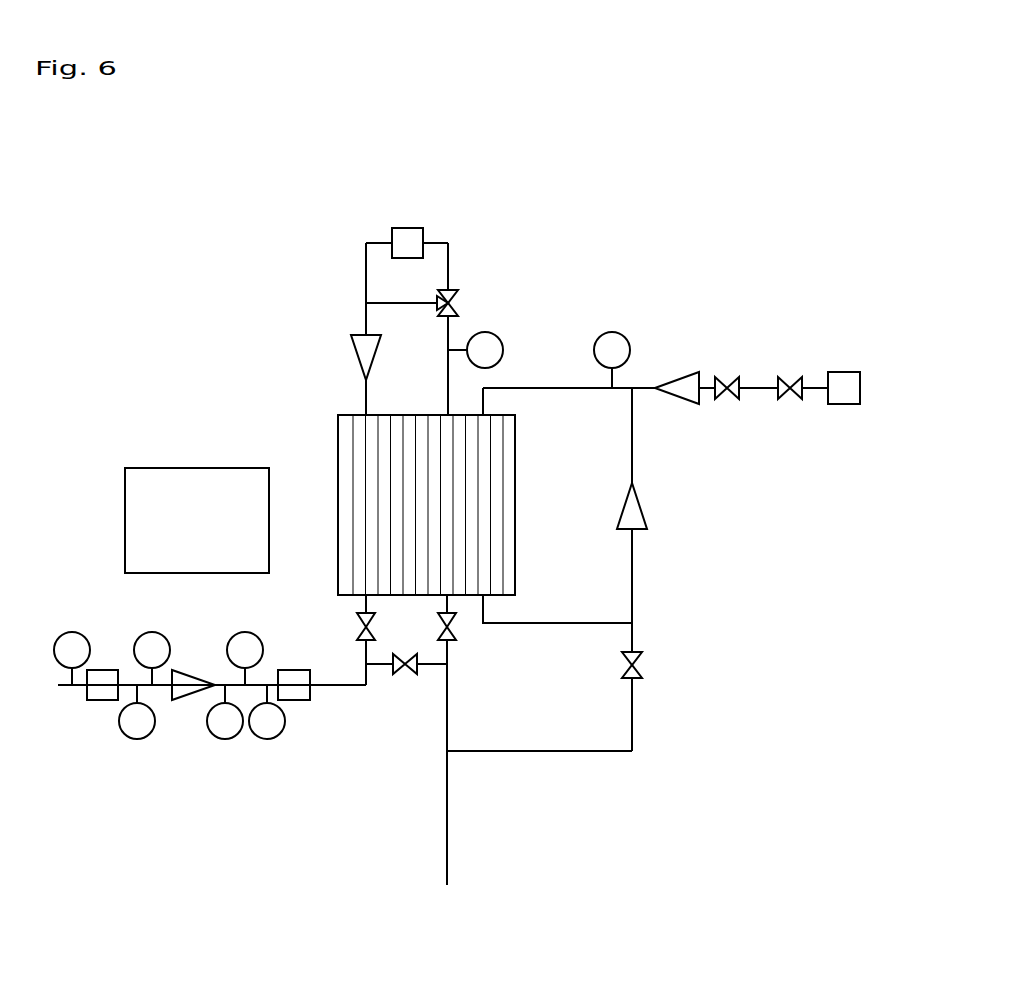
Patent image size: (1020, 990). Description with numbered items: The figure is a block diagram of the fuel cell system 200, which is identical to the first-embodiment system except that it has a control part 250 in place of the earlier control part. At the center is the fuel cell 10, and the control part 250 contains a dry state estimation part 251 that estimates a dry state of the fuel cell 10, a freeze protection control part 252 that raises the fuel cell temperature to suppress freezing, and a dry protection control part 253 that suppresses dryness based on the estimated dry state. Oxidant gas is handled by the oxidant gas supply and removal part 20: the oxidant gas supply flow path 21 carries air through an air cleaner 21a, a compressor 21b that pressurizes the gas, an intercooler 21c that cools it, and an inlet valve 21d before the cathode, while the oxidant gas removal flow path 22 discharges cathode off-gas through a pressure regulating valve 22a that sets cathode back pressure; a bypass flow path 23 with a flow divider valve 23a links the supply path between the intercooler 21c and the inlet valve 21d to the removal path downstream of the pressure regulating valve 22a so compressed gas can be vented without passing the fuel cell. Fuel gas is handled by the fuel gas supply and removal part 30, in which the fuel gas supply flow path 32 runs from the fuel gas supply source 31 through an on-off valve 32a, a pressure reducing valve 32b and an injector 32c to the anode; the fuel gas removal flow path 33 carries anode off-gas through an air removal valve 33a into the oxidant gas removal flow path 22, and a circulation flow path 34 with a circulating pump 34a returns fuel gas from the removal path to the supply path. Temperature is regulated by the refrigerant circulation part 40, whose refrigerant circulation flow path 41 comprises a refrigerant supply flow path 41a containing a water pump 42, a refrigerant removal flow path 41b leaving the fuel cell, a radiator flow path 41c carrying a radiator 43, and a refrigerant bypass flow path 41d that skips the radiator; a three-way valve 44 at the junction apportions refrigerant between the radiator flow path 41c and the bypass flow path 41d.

The fuel cell system 200 is at (459, 141).
The fuel cell 10 is at (337, 437).
The control part 250 is at (167, 467).
The dry state estimation part 251 is at (174, 506).
The freeze protection control part 252 is at (223, 506).
The dry protection control part 253 is at (196, 536).
The refrigerant circulation part 40 is at (502, 203).
The refrigerant circulation flow path 41 is at (330, 308).
The refrigerant supply flow path 41a is at (366, 268).
The refrigerant removal flow path 41b is at (449, 272).
The radiator flow path 41c is at (388, 243).
The refrigerant bypass flow path 41d is at (388, 303).
The water pump 42 is at (352, 350).
The radiator 43 is at (420, 227).
The three-way valve 44 is at (459, 297).
The fuel gas supply and removal part 30 is at (770, 501).
The fuel gas supply source 31 is at (845, 372).
The fuel gas supply flow path 32 is at (542, 388).
The on-off valve 32a is at (793, 378).
The pressure reducing valve 32b is at (730, 378).
The injector 32c is at (668, 380).
The fuel gas removal flow path 33 is at (545, 622).
The air removal valve 33a is at (643, 665).
The circulation flow path 34 is at (632, 441).
The circulating pump 34a is at (641, 497).
The oxidant gas supply and removal part 20 is at (312, 763).
The oxidant gas supply flow path 21 is at (333, 688).
The air cleaner 21a is at (103, 670).
The compressor 21b is at (190, 670).
The intercooler 21c is at (293, 670).
The inlet valve 21d is at (358, 627).
The oxidant gas removal flow path 22 is at (447, 805).
The pressure regulating valve 22a is at (453, 627).
The bypass flow path 23 is at (370, 667).
The flow divider valve 23a is at (408, 669).